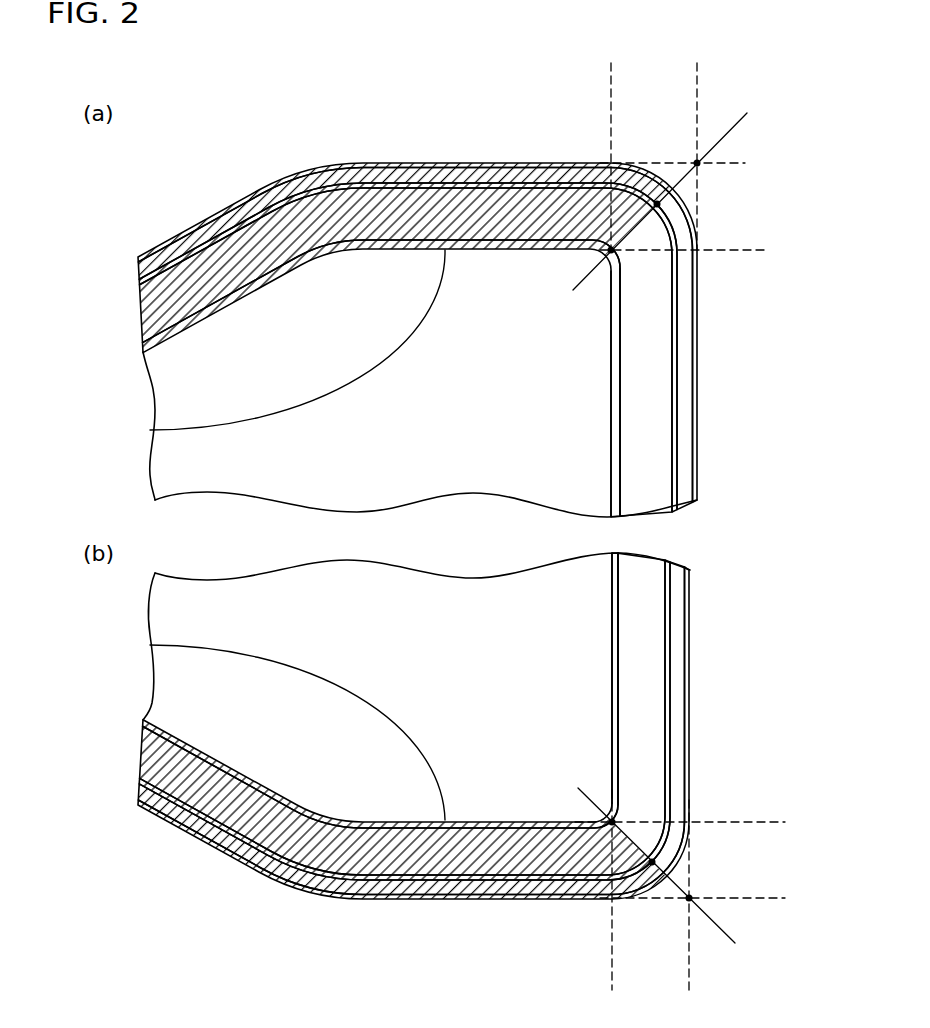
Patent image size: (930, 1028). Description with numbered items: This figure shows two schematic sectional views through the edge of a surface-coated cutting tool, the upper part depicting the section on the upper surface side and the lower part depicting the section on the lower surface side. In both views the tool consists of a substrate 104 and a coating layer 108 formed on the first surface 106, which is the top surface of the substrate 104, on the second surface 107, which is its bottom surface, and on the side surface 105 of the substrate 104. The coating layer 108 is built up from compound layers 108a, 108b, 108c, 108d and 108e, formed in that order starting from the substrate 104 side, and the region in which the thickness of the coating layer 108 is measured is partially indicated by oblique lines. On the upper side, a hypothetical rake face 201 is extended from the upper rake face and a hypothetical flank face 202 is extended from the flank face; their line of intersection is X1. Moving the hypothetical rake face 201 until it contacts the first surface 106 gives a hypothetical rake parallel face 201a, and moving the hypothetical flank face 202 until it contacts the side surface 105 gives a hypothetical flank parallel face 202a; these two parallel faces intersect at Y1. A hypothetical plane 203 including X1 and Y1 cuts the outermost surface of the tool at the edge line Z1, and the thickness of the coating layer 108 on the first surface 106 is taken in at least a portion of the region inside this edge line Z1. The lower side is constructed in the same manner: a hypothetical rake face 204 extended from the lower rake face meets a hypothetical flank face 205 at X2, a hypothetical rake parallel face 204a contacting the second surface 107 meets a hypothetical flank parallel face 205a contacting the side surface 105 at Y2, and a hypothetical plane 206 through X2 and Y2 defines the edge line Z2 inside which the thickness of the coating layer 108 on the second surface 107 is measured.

The substrate 104 is at (175, 391).
The side surface 105 is at (613, 453).
The first surface 106 is at (150, 430).
The second surface 107 is at (150, 645).
The coating layer 108 is at (353, 531).
The compound layer 108a is at (62, 246).
The compound layer 108b is at (160, 312).
The compound layer 108c is at (144, 293).
The compound layer 108d is at (145, 280).
The compound layer 108e is at (140, 258).
The hypothetical rake face 201 is at (654, 162).
The hypothetical rake parallel face 201a is at (767, 250).
The hypothetical flank face 202 is at (697, 83).
The hypothetical flank parallel face 202a is at (610, 123).
The hypothetical plane 203 is at (747, 117).
The hypothetical rake face 204 is at (737, 900).
The hypothetical rake parallel face 204a is at (720, 822).
The hypothetical flank face 205 is at (692, 973).
The hypothetical flank parallel face 205a is at (612, 967).
The hypothetical plane 206 is at (717, 927).
The line of intersection X1 is at (697, 163).
The line of intersection Y1 is at (611, 250).
The edge line Z1 is at (657, 204).
The line of intersection X2 is at (689, 898).
The line of intersection Y2 is at (612, 822).
The edge line Z2 is at (652, 862).